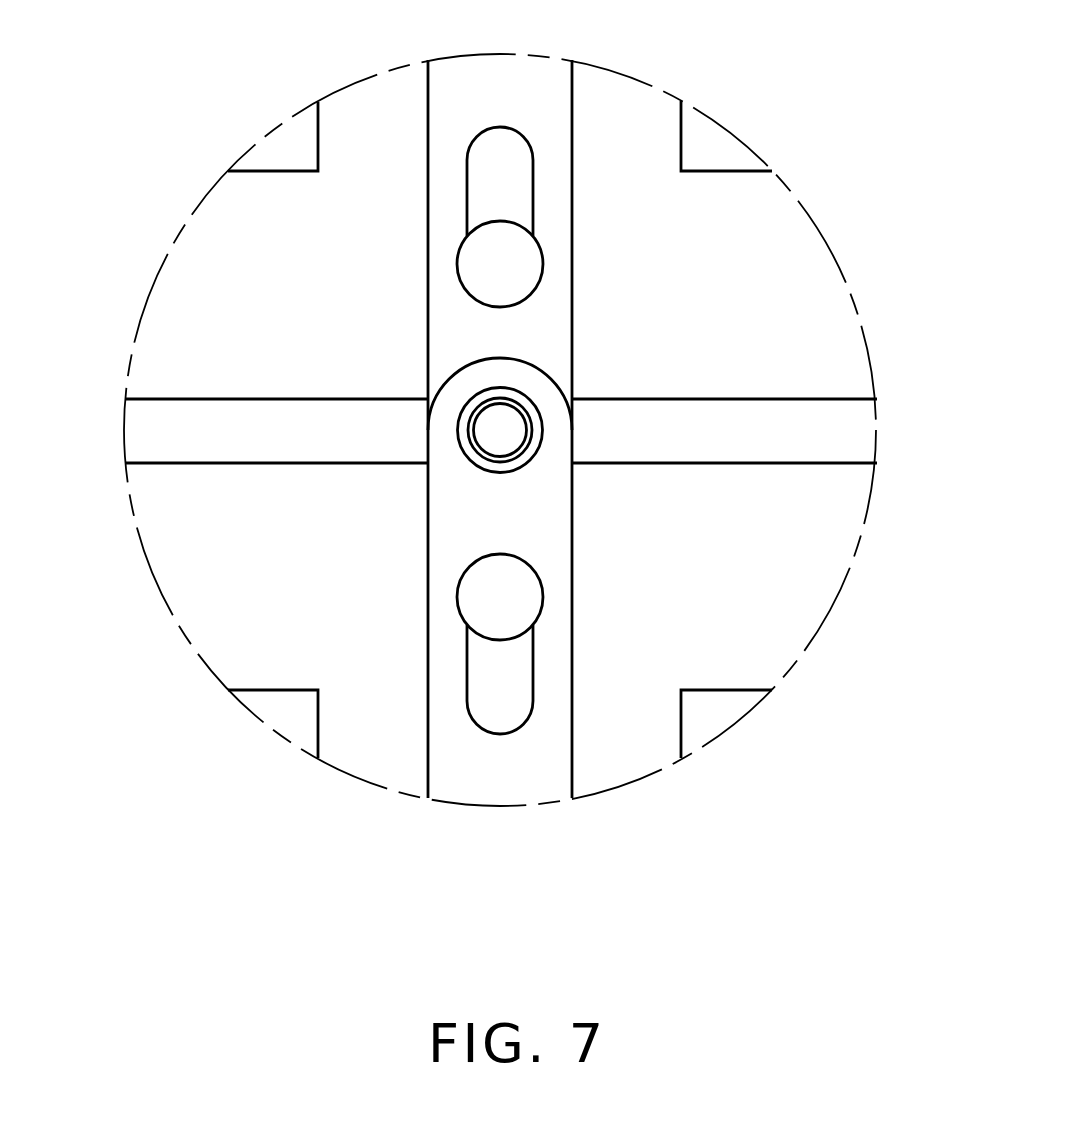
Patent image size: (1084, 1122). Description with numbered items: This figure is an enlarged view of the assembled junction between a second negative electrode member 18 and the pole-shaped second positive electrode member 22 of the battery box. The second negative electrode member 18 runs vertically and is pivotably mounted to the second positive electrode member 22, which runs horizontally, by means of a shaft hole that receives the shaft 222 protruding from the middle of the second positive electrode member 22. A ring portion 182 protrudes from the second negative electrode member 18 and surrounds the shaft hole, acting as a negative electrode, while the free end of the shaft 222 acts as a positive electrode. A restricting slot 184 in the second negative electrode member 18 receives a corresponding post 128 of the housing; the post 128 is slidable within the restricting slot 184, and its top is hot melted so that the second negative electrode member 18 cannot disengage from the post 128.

The second negative electrode member 18 is at (455, 97).
The second positive electrode member 22 is at (780, 424).
The post 128 is at (500, 264).
The ring portion 182 is at (490, 472).
The restricting slot 184 is at (500, 185).
The shaft 222 is at (493, 415).